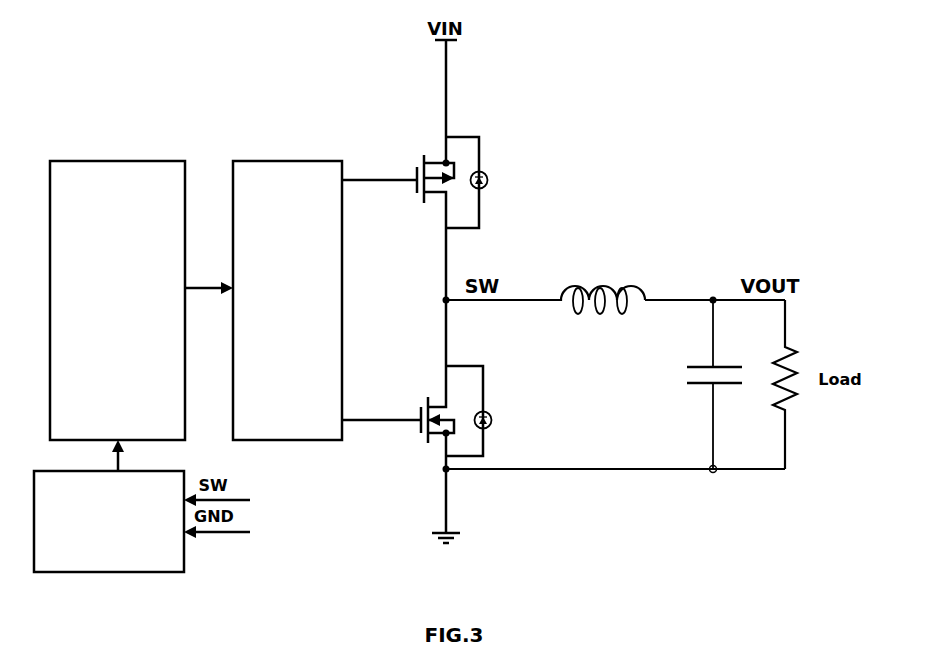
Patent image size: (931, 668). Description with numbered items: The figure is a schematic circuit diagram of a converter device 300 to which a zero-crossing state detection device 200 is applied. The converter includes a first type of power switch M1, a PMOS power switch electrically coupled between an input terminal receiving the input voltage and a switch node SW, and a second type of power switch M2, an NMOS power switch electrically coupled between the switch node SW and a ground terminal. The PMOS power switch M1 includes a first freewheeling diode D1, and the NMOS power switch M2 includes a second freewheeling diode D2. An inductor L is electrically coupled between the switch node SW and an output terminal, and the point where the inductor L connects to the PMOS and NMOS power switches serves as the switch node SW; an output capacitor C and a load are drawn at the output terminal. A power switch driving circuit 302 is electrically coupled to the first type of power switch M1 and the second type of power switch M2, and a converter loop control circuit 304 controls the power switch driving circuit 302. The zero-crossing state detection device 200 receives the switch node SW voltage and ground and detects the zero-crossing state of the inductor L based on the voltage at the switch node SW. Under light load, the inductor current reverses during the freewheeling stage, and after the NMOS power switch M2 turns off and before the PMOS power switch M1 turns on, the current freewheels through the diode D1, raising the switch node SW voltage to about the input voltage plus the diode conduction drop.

The converter device 300 is at (298, 129).
The power switch driving circuit 302 is at (287, 300).
The converter loop control circuit 304 is at (117, 300).
The zero-crossing state detection device 200 is at (109, 521).
The first type of power switch M1 is at (398, 226).
The second type of power switch M2 is at (398, 416).
The first freewheeling diode D1 is at (483, 182).
The second freewheeling diode D2 is at (486, 411).
The inductor L is at (601, 287).
The output capacitor C is at (703, 386).